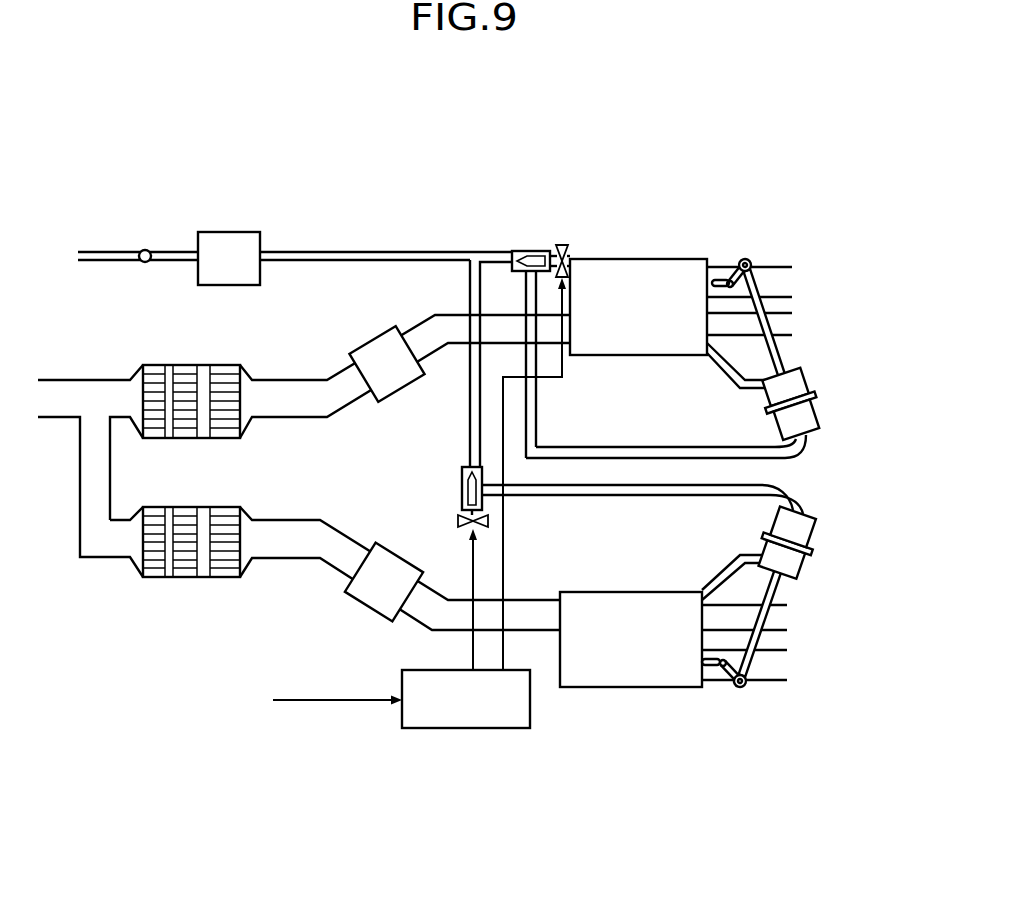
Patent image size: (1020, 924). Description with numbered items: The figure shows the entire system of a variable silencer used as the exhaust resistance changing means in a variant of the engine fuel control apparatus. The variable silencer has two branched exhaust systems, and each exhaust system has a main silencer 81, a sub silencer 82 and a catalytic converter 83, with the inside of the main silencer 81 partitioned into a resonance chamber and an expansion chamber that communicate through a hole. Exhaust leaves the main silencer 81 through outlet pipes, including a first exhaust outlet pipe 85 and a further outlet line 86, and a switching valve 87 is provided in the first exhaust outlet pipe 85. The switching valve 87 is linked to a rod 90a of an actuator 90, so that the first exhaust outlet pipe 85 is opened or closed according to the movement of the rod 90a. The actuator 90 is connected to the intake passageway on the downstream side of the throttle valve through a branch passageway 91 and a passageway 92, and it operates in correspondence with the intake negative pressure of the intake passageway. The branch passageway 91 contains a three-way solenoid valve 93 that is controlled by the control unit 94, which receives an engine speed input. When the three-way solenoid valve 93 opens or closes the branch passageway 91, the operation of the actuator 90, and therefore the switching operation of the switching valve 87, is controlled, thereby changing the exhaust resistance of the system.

The main silencer 81 is at (622, 259).
The sub silencer 82 is at (377, 346).
The catalytic converter 83 is at (202, 365).
The first exhaust outlet pipe 85 is at (764, 266).
The main exhaust passage 86 is at (792, 313).
The switching valve 87 is at (722, 282).
The actuator 90 is at (812, 406).
The rod 90a is at (772, 350).
The branch passageway 91 is at (470, 401).
The passageway 92 is at (373, 252).
The three-way solenoid valve 93 is at (540, 251).
The control unit 94 is at (452, 728).